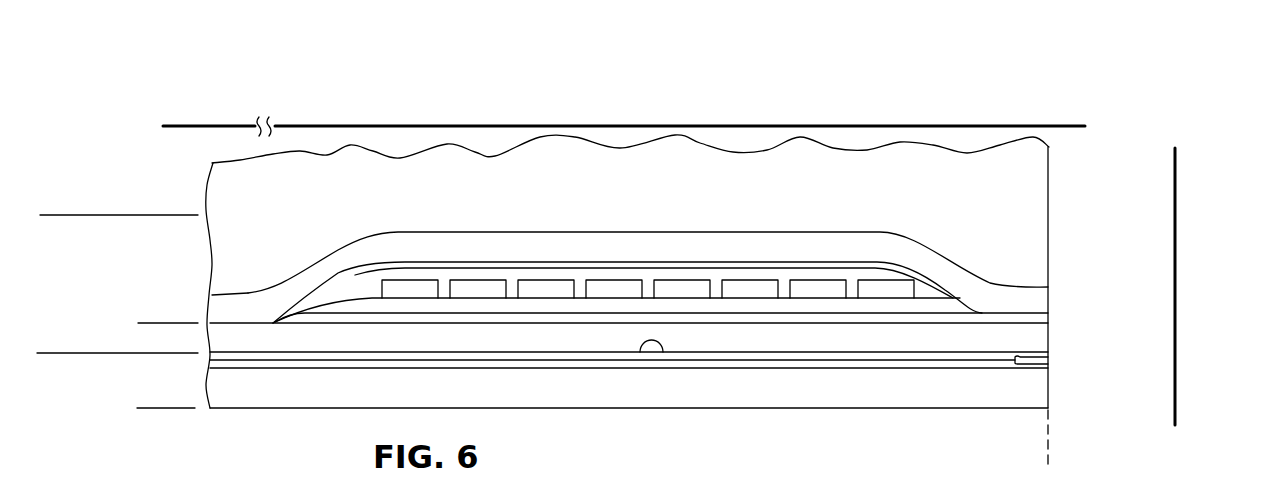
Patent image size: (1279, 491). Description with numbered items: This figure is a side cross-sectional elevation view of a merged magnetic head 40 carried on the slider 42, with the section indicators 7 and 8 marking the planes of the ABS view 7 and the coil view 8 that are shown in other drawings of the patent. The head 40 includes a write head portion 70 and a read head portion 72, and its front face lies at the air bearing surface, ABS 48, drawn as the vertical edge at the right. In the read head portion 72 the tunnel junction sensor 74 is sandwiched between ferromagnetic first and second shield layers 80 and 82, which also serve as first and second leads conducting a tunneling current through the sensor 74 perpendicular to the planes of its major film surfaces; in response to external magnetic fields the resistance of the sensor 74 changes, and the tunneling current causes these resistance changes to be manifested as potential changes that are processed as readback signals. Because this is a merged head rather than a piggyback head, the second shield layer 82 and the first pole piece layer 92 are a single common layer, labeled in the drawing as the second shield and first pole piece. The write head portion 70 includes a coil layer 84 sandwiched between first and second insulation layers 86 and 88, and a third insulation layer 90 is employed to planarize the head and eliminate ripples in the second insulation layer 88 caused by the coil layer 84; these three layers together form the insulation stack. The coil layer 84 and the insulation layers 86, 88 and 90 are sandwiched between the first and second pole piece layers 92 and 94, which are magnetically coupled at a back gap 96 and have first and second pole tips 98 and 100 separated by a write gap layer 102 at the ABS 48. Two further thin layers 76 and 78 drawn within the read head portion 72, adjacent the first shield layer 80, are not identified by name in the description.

The merged magnetic head 40 is at (190, 178).
The slider body 42 is at (1032, 181).
The section line 8- 8 is at (1077, 126).
The section line 7- 7 is at (1176, 417).
The write head portion 70 is at (152, 323).
The read head portion 72 is at (152, 408).
The back gap 96 is at (247, 322).
The third insulation layer 90 is at (448, 262).
The second pole piece layer 94 is at (792, 243).
The second insulation layer 88 is at (930, 287).
The second pole tip 100 is at (1048, 290).
The coil layer 84 is at (678, 285).
The write gap layer 102 is at (1048, 315).
The first pole tip 98 is at (1048, 340).
The tunnel junction sensor 74 is at (1048, 361).
The first shield layer S1 76 is at (698, 373).
The first insulation layer 86 is at (552, 307).
The read gap layer 78 is at (640, 352).
The first shield layer 80 is at (778, 395).
The second shield layer 82 is at (878, 404).
The first pole piece layer 92 is at (884, 340).
The air bearing surface ABS 48 is at (1048, 461).